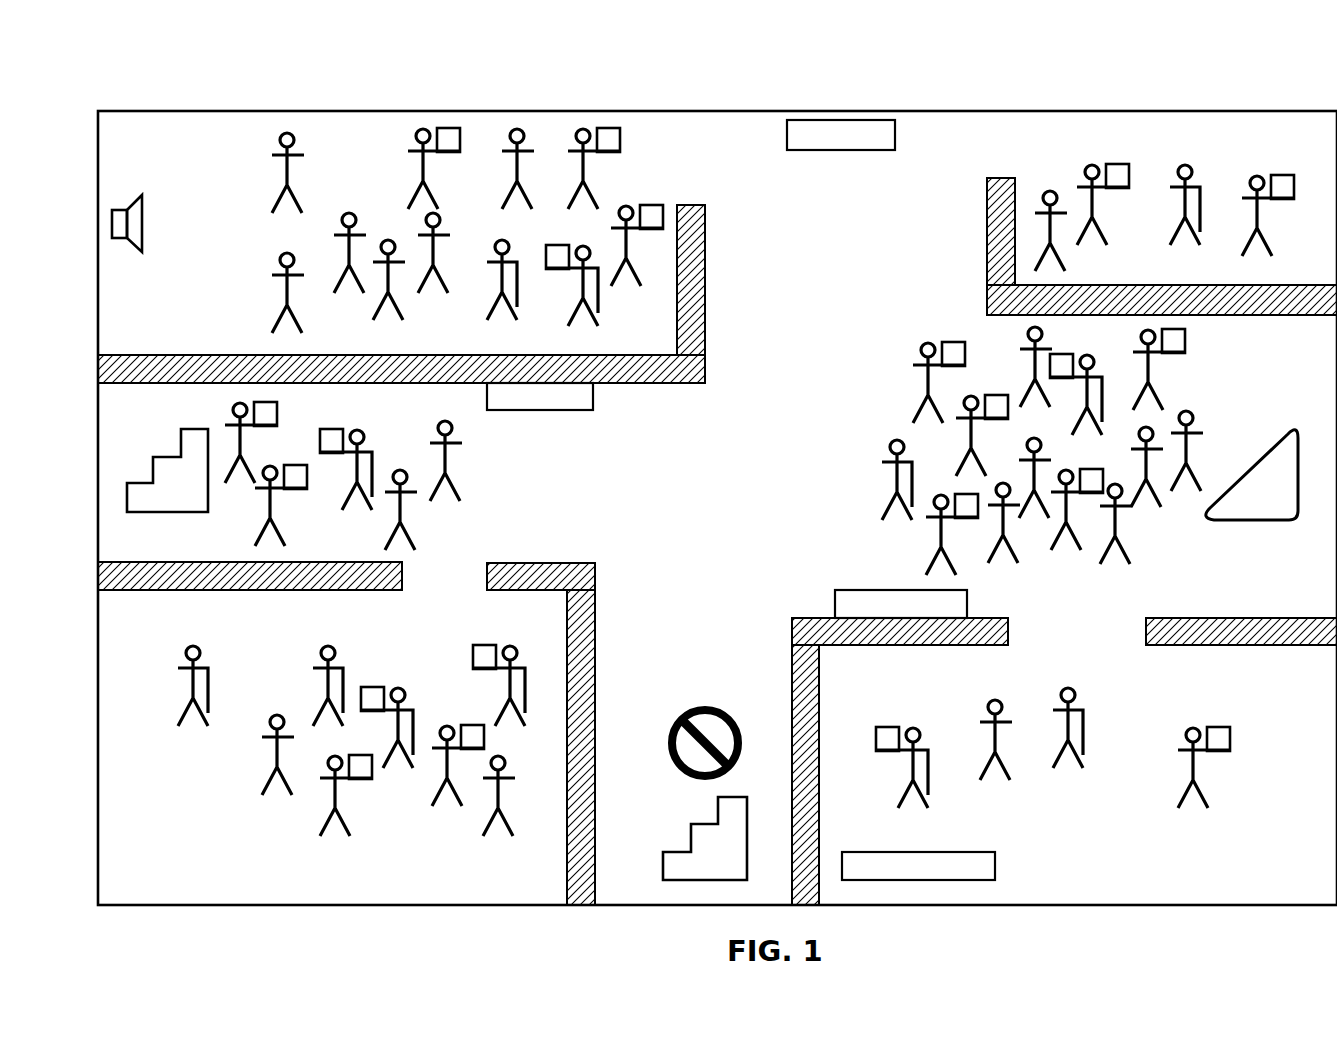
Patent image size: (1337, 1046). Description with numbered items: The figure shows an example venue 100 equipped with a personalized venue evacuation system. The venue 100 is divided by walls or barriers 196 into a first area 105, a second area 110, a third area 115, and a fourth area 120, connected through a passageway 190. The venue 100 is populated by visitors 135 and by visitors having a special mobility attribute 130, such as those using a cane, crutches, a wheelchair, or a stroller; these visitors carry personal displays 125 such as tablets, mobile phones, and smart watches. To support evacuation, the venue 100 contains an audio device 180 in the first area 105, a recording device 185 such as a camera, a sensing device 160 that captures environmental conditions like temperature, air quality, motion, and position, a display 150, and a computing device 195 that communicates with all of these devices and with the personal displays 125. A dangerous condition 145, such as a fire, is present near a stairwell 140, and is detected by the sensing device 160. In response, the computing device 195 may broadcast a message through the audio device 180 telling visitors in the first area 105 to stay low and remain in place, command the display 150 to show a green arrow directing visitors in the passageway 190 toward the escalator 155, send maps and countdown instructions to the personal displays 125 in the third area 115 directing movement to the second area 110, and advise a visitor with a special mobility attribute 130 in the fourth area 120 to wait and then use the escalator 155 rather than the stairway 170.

The venue 100 is at (245, 70).
The first area 105 is at (172, 157).
The second area 110 is at (1302, 157).
The third area 115 is at (1064, 761).
The fourth area 120 is at (162, 884).
The personal display 125 is at (1230, 735).
The visitor having a special mobility attribute 130 is at (1083, 762).
The visitor 135 is at (1005, 770).
The stairwell 140 is at (688, 828).
The dangerous condition 145 is at (690, 712).
The display 150 is at (835, 613).
The escalator 155 is at (1215, 523).
The sensing device 160 is at (593, 395).
The stairway 170 is at (170, 446).
The audio device 180 is at (142, 232).
The recording device 185 is at (843, 150).
The passageway 190 is at (737, 491).
The computing device 195 is at (995, 866).
The wall or barrier 196 is at (595, 567).